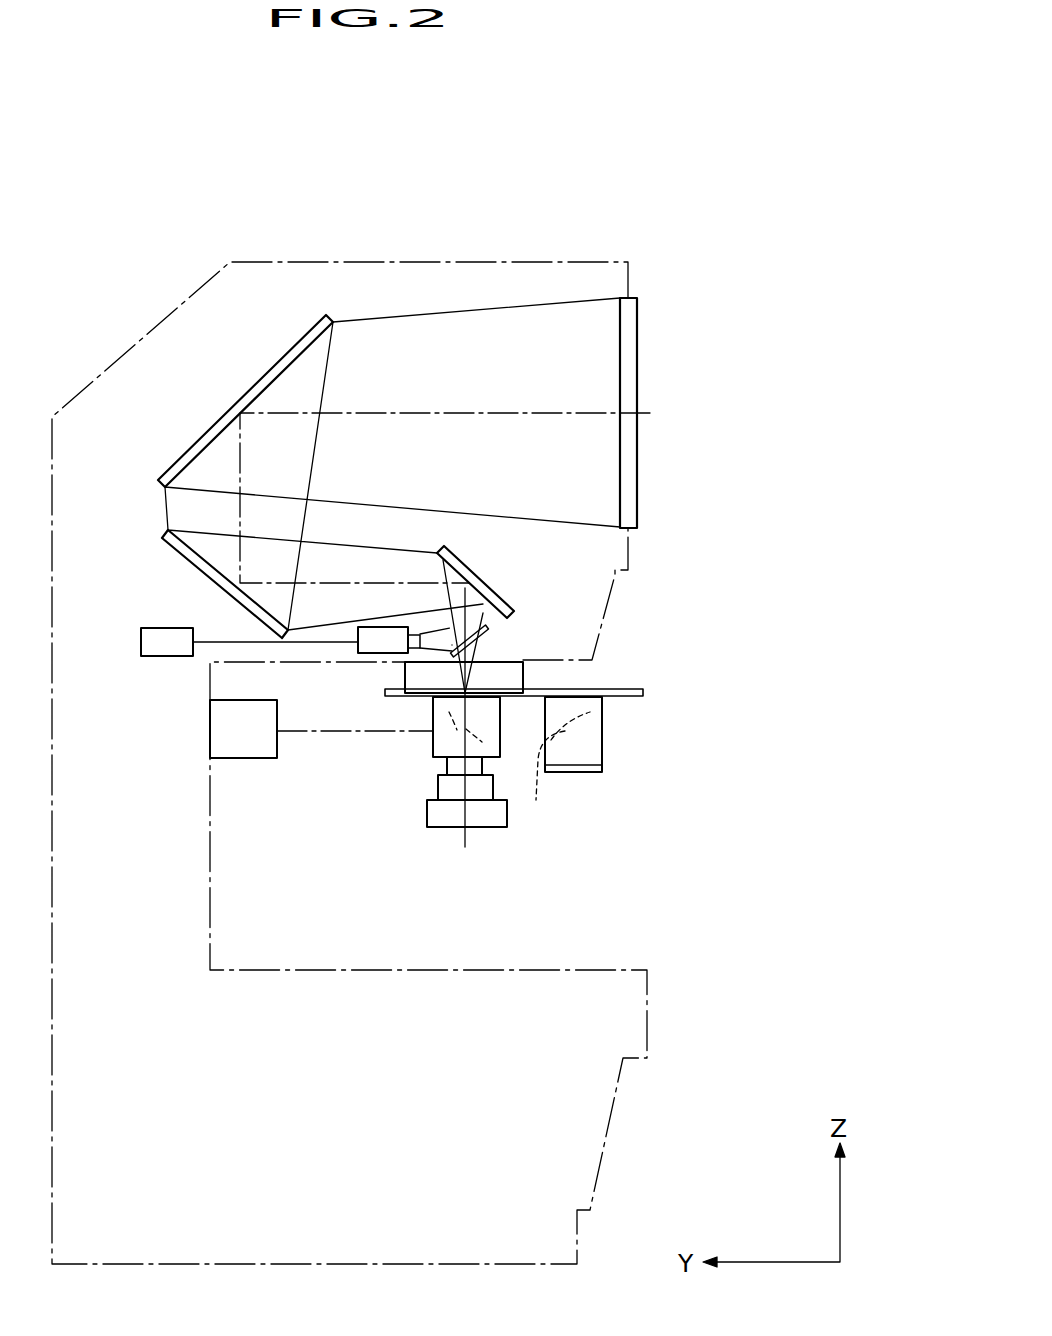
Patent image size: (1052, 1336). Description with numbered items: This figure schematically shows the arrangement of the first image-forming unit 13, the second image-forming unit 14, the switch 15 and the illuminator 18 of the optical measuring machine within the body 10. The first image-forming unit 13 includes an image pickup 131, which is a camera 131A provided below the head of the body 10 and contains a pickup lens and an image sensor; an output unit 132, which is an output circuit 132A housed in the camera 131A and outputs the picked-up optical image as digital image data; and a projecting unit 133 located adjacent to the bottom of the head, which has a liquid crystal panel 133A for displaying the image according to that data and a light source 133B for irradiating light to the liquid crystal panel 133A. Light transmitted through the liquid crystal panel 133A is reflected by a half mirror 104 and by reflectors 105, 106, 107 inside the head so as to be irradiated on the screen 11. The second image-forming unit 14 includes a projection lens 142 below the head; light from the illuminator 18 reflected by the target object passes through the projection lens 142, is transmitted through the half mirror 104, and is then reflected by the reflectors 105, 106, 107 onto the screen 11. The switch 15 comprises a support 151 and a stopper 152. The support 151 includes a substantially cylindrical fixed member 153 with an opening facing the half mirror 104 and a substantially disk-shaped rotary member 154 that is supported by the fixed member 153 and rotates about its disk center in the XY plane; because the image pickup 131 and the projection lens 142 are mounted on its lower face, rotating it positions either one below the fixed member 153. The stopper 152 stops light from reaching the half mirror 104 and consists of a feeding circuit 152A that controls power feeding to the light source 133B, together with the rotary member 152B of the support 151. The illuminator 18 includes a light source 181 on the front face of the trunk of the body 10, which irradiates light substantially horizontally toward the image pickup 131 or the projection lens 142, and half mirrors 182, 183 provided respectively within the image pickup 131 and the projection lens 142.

The body 10 is at (84, 388).
The screen 11 is at (637, 362).
The first image-forming unit 13 is at (629, 785).
The second image-forming unit 14 is at (420, 872).
The switch 15 is at (655, 717).
The illuminator 18 is at (387, 785).
The half mirror 104 is at (487, 633).
The reflector 105 is at (483, 583).
The reflector 106 is at (187, 557).
The reflector 107 is at (217, 422).
The image pickup 131 is at (624, 804).
The camera 131A is at (602, 760).
The output unit 132 is at (629, 742).
The output circuit 132A is at (607, 713).
The projecting unit 133 is at (397, 650).
The liquid crystal panel 133A is at (455, 645).
The light source 133B is at (357, 648).
The projection lens 142 is at (427, 812).
The support 151 is at (621, 691).
The stopper 152 is at (138, 733).
The feeding circuit 152A is at (167, 658).
The rotary member 152B is at (587, 714).
The fixed member 153 is at (525, 678).
The rotary member 154 is at (587, 710).
The light source 181 is at (243, 758).
The half mirror 182 is at (501, 780).
The half mirror 183 is at (445, 740).